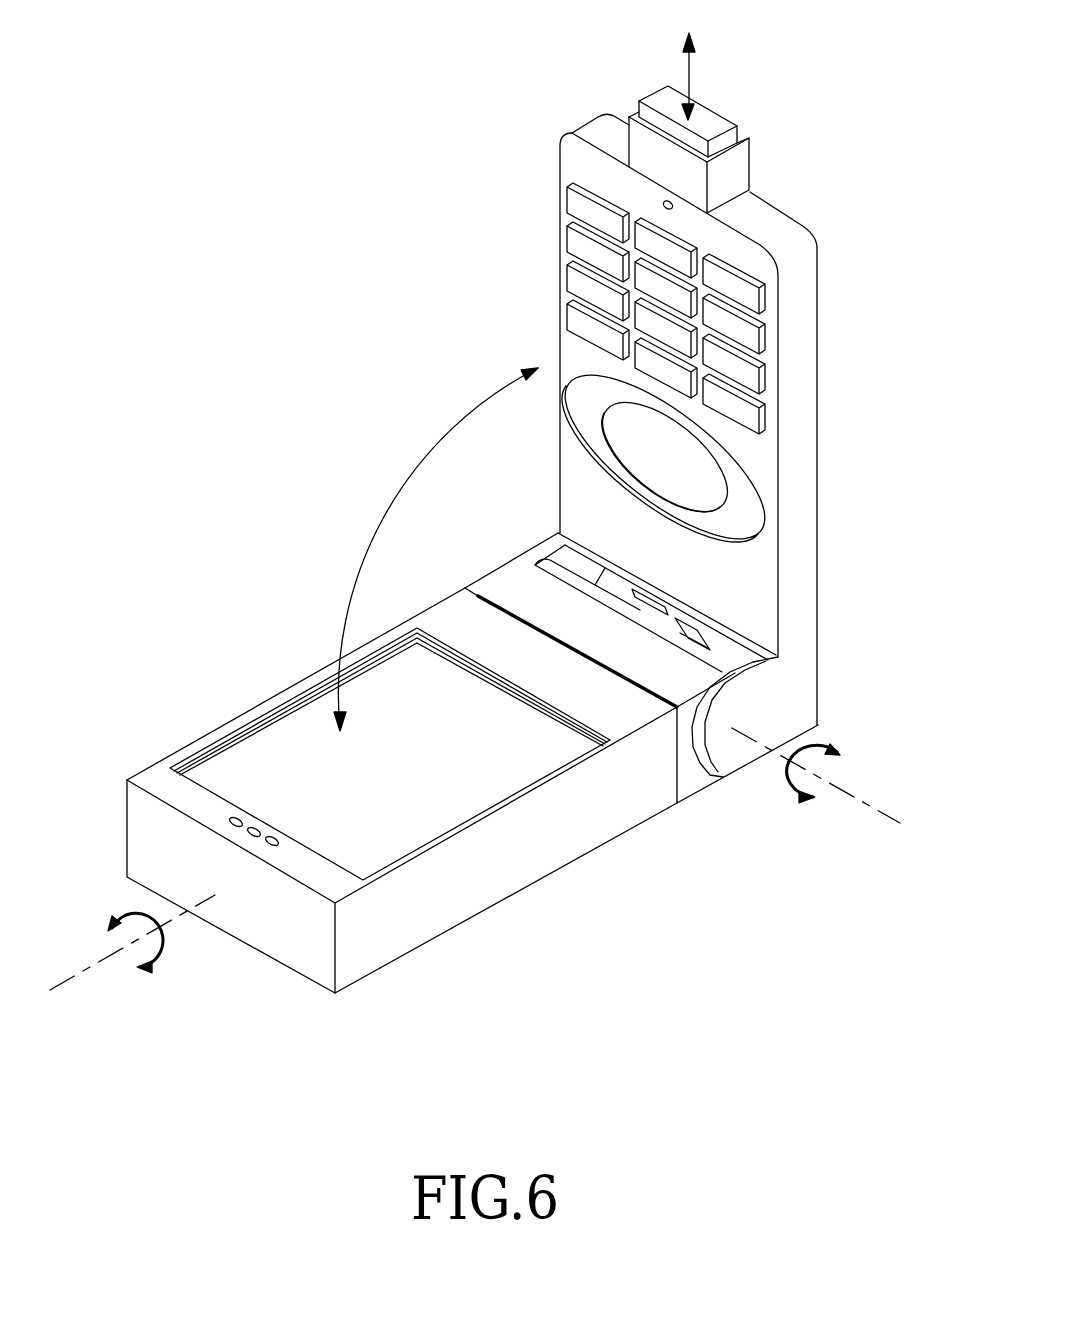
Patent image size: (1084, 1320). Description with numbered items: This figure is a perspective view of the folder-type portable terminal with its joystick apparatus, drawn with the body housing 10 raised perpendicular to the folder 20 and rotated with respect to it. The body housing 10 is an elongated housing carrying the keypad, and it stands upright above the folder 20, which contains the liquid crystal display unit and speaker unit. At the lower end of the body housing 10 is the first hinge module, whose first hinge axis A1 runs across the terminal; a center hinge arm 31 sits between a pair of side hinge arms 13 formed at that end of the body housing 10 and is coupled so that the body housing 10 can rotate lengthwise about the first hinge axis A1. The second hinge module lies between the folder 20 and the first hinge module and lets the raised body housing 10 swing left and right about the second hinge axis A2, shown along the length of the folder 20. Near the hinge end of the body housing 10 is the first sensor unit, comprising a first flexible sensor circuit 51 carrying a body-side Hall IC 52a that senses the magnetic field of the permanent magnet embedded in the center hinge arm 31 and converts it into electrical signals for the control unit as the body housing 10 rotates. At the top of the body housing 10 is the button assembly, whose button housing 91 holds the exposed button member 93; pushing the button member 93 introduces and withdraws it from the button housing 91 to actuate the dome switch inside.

The body housing 10 is at (820, 430).
The side hinge arms 13 is at (760, 700).
The folder 20 is at (512, 865).
The center hinge arm 31 is at (522, 589).
The first flexible sensor circuit 51 is at (706, 620).
The body-side Hall IC 52a is at (668, 598).
The button housing 91 is at (733, 170).
The button member 93 is at (710, 123).
The first hinge axis A1 is at (862, 802).
The second hinge axis A2 is at (80, 972).